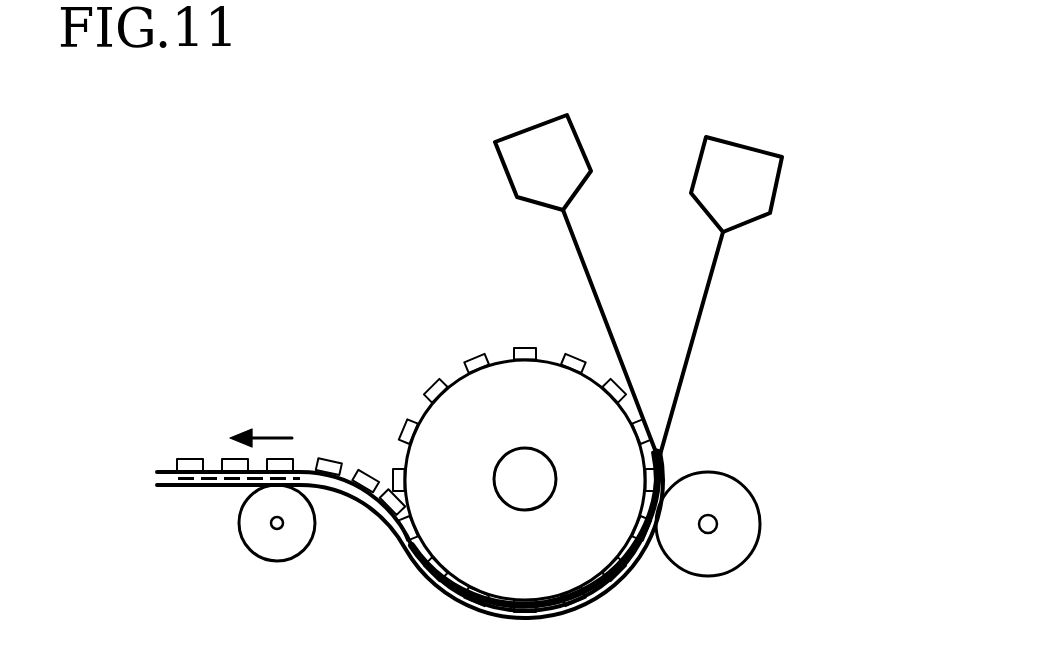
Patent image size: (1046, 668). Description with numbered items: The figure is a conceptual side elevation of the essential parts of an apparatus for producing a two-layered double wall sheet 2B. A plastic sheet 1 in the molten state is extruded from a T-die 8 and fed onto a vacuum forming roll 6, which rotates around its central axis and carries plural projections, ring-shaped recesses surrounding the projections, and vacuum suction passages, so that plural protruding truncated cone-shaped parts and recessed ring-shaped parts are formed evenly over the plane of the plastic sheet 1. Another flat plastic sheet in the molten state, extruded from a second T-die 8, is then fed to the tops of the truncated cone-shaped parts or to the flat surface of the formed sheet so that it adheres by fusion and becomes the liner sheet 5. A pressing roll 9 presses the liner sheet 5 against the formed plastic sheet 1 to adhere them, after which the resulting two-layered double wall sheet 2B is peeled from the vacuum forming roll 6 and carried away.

The web (base sheet) 1 is at (212, 466).
The two-layered double wall sheet 2B is at (178, 440).
The liner sheet 5 is at (210, 487).
The vacuum forming roll 6 is at (469, 400).
The T-die 8 is at (525, 168).
The pressing roll 9 is at (715, 485).